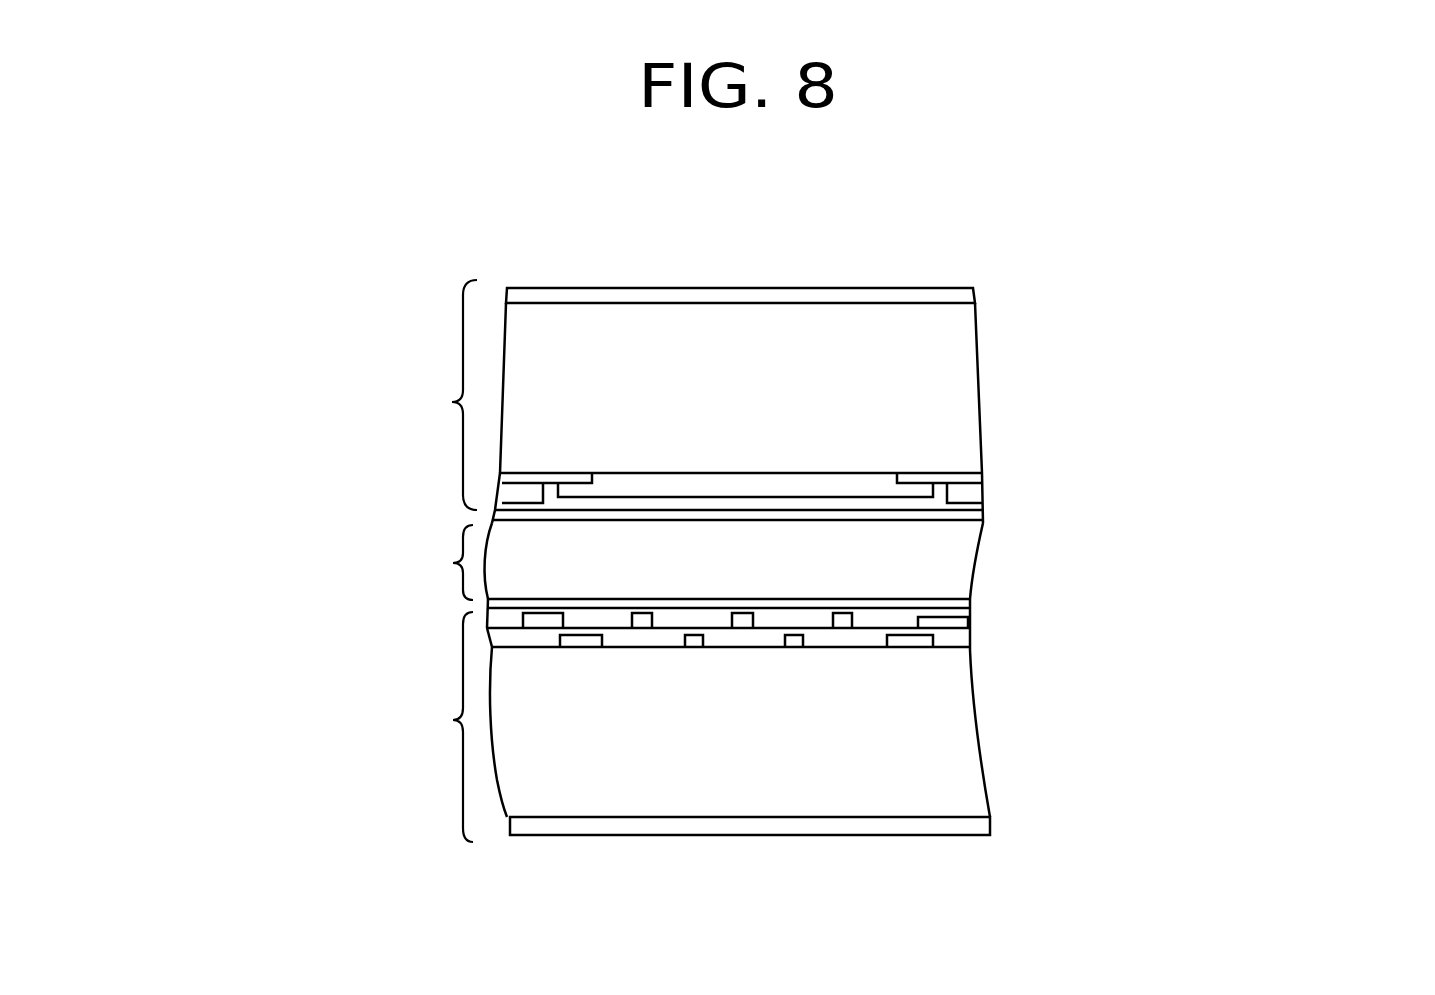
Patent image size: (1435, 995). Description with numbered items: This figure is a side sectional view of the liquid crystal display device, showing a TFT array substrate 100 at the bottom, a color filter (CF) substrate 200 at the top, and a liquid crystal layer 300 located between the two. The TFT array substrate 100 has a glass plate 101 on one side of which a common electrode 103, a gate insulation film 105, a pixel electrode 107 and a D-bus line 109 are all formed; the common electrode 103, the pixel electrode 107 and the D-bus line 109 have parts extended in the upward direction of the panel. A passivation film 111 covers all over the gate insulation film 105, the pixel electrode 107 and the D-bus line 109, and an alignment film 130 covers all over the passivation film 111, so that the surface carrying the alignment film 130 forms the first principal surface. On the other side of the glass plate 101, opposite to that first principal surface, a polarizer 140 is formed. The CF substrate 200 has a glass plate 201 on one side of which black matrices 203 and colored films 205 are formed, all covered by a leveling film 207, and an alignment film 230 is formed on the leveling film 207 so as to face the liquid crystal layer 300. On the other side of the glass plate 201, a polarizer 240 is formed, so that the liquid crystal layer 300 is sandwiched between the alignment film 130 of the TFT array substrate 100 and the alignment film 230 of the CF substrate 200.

The TFT array substrate 100 is at (341, 727).
The glass plate 101 is at (967, 730).
The common electrode 103 is at (583, 640).
The gate insulation film 105 is at (960, 635).
The pixel electrode 107 is at (645, 620).
The D-bus line 109 is at (535, 620).
The passivation film 111 is at (970, 610).
The alignment film 130 is at (970, 600).
The polarizer 140 is at (980, 823).
The CF substrate 200 is at (316, 395).
The glass plate 201 is at (972, 355).
The black matrices 203 is at (577, 478).
The colored films 205 is at (525, 492).
The leveling film 207 is at (973, 507).
The alignment film 230 is at (978, 517).
The polarizer 240 is at (967, 297).
The liquid crystal layer 300 is at (295, 562).